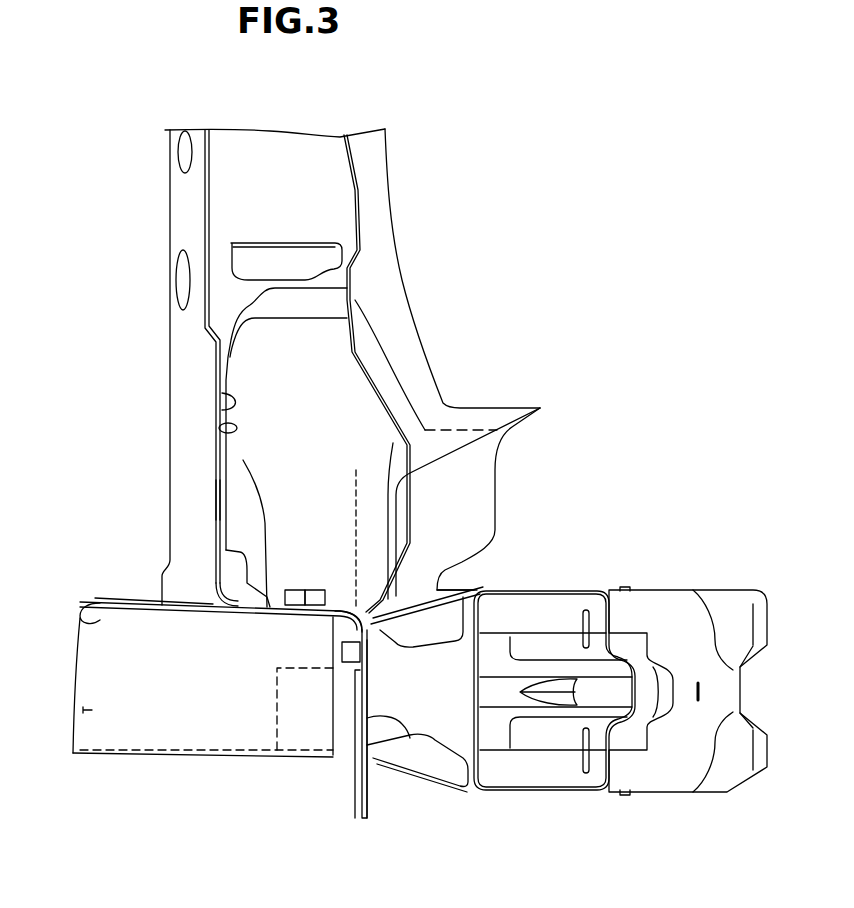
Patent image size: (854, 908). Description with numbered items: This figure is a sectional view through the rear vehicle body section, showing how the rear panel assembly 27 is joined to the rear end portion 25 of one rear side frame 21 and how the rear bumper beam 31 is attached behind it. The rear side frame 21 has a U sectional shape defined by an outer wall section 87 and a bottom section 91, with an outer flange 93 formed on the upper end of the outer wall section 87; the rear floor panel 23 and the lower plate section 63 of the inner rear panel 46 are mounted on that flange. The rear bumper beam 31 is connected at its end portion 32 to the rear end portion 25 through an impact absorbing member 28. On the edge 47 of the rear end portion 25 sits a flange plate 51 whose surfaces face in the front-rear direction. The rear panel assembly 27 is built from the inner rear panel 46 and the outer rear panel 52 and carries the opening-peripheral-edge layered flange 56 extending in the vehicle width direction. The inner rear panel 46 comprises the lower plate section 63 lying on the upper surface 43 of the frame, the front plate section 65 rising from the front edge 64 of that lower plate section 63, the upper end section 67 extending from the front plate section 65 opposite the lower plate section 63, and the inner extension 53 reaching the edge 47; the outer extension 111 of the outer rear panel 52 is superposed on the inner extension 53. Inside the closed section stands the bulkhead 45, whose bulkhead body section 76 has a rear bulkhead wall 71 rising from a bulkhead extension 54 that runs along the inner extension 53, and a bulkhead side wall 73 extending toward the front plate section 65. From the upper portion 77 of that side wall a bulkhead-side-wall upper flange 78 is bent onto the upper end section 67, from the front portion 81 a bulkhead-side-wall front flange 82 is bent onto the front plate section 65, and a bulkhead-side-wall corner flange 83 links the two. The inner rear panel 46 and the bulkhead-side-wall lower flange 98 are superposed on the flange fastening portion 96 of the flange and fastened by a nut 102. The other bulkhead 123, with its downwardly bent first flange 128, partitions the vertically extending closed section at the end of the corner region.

The rear side frame 21 is at (141, 790).
The rear floor panel 23 is at (120, 603).
The rear end portion 25 is at (250, 715).
The rear panel assembly 27 is at (400, 151).
The impact absorbing member 28 is at (440, 720).
The rear bumper beam 31 is at (662, 585).
The end portion 32 is at (683, 780).
The upper surface 43 is at (213, 600).
The bulkhead 45 is at (218, 307).
The inner rear panel 46 is at (203, 190).
The edge 47 is at (360, 626).
The flange plate 51 is at (353, 803).
The outer rear panel 52 is at (357, 190).
The inner extension 53 is at (350, 700).
The bulkhead extension 54 is at (410, 742).
The opening-peripheral-edge layered flange 56 is at (407, 333).
The lower plate section 63 is at (215, 497).
The front edge 64 is at (243, 607).
The front plate section 65 is at (210, 497).
The upper end section 67 is at (333, 230).
The rear bulkhead wall 71 is at (362, 512).
The bulkhead side wall 73 is at (290, 437).
The bulkhead body section 76 is at (362, 408).
The upper portion 77 is at (300, 332).
The bulkhead-side-wall upper flange 78 is at (267, 300).
The front portion 81 is at (213, 400).
The bulkhead-side-wall front flange 82 is at (213, 435).
The bulkhead-side-wall corner flange 83 is at (232, 332).
The outer wall section 87 is at (85, 710).
The bottom section 91 is at (108, 758).
The outer flange 93 is at (90, 608).
The flange fastening portion 96 is at (342, 655).
The bulkhead-side-wall lower flange 98 is at (290, 590).
The nut 102 is at (313, 590).
The outer extension 111 is at (371, 790).
The bulkhead 123 is at (288, 235).
The first flange 128 is at (233, 258).